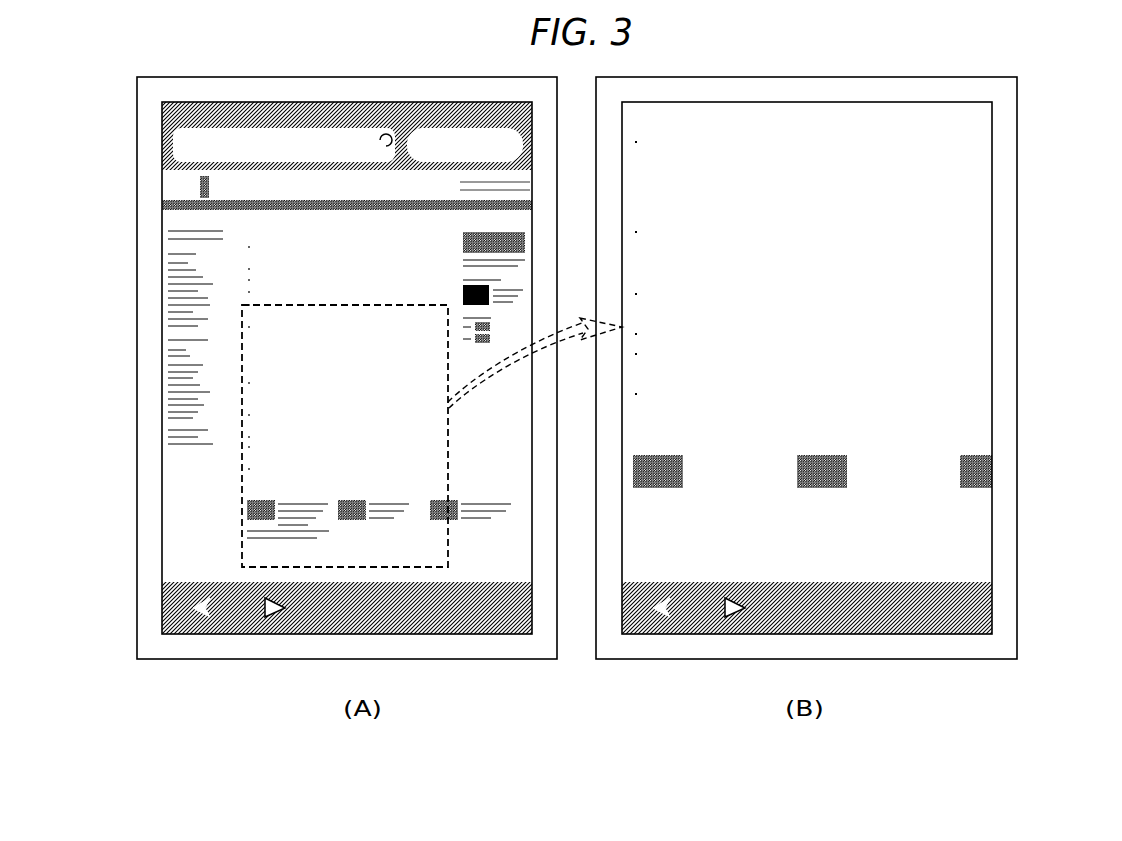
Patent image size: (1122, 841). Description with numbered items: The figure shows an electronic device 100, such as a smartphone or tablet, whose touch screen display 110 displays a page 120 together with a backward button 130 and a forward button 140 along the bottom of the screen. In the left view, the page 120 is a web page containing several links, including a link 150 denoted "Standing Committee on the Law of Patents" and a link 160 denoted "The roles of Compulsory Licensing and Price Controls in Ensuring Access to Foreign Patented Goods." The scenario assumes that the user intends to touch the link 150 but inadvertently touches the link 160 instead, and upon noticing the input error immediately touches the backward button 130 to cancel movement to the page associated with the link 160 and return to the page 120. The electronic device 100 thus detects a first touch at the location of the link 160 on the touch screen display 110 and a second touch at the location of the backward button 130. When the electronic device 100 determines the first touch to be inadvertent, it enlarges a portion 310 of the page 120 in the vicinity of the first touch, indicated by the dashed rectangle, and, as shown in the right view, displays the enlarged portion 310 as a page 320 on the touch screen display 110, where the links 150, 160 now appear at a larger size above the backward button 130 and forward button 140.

The electronic device 100 is at (137, 98).
The touch screen display 110 is at (162, 613).
The page 120 is at (165, 497).
The backward button 130 is at (196, 612).
The forward button 140 is at (277, 612).
The link 150 is at (252, 433).
The link 160 is at (252, 455).
The portion 310 is at (242, 350).
The page 320 is at (986, 517).